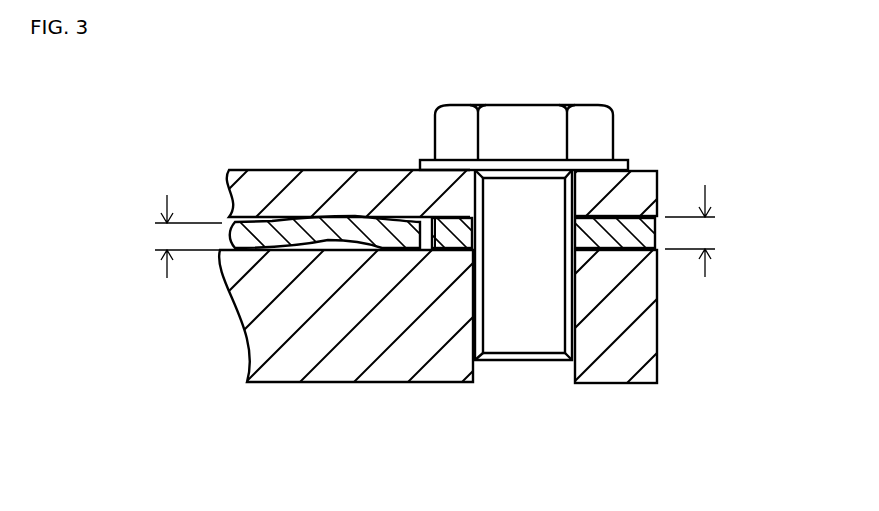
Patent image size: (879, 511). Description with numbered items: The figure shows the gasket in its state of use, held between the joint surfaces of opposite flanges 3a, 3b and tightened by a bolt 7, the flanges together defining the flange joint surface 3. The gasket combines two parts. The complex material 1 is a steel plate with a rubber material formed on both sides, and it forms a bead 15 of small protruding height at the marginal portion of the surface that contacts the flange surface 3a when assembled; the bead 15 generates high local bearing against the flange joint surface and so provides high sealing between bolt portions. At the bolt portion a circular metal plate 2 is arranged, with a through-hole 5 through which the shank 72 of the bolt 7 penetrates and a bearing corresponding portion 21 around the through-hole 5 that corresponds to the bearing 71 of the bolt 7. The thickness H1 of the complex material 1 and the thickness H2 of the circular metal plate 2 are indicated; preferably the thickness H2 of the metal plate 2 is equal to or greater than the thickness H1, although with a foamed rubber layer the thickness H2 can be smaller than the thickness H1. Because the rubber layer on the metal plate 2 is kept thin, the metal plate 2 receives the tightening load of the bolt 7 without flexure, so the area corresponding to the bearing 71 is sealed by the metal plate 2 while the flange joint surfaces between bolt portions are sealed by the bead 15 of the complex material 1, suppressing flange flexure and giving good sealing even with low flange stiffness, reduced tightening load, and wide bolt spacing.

The complex material 1 is at (268, 212).
The circular metal plate 2 is at (481, 214).
The bead 15 is at (340, 223).
The bearing corresponding portion 21 is at (447, 243).
The flange joint surface 3 is at (448, 283).
The flange 3a is at (657, 180).
The flange 3b is at (657, 365).
The through-hole 5 is at (472, 227).
The bolt 7 is at (589, 257).
The bearing 71 is at (628, 164).
The shank 72 is at (523, 333).
The thickness of the complex material H1 is at (171, 236).
The thickness of the circular metal plate H2 is at (713, 231).